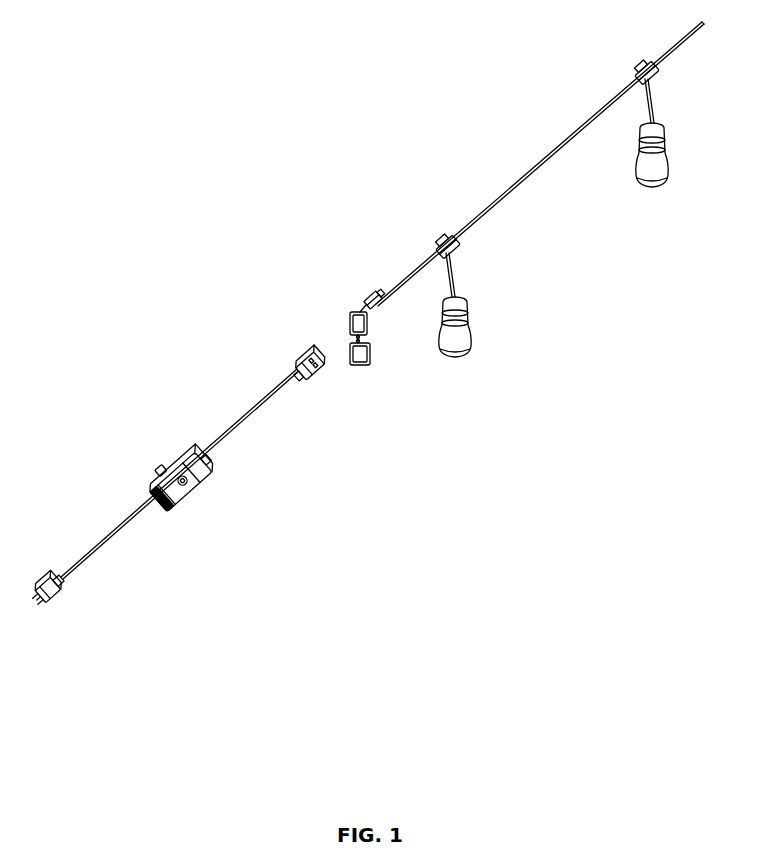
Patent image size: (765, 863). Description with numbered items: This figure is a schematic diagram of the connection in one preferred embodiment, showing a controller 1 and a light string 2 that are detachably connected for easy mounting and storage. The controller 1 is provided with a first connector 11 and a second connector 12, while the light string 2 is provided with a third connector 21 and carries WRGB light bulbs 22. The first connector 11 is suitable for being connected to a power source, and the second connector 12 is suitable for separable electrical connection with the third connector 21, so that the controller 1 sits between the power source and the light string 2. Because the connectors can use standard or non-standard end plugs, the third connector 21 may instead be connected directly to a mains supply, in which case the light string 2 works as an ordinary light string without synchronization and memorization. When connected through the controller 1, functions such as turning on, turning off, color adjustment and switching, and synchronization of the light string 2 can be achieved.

The controller 1 is at (157, 476).
The first connector 11 is at (53, 600).
The second connector 12 is at (315, 375).
The light string 2 is at (507, 157).
The third connector 21 is at (350, 315).
The WRGB light bulb 22 is at (467, 352).